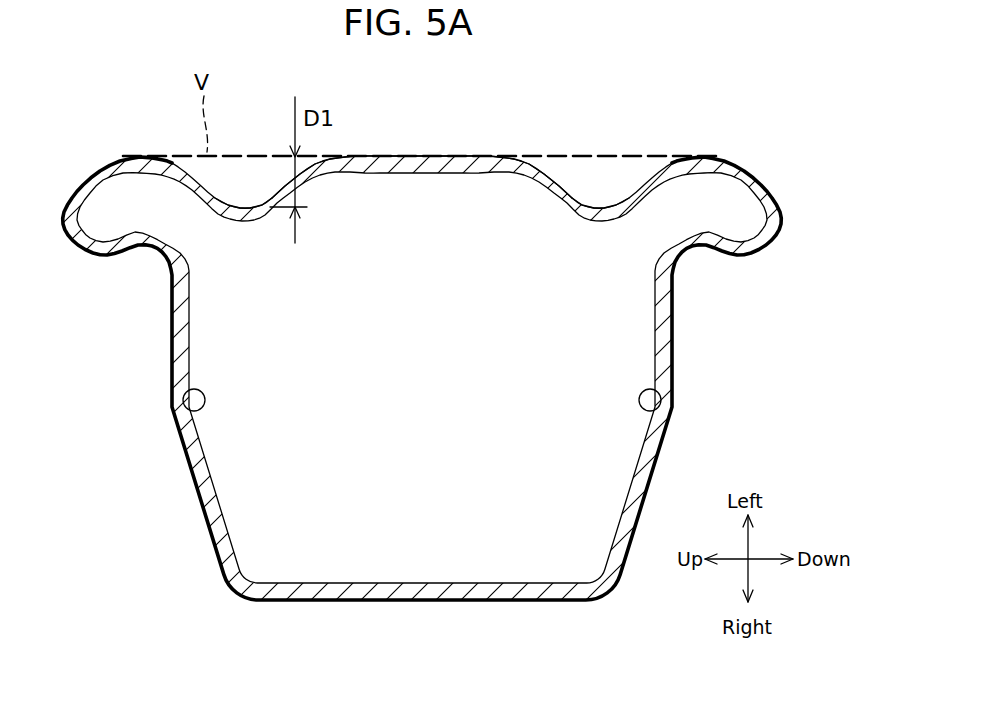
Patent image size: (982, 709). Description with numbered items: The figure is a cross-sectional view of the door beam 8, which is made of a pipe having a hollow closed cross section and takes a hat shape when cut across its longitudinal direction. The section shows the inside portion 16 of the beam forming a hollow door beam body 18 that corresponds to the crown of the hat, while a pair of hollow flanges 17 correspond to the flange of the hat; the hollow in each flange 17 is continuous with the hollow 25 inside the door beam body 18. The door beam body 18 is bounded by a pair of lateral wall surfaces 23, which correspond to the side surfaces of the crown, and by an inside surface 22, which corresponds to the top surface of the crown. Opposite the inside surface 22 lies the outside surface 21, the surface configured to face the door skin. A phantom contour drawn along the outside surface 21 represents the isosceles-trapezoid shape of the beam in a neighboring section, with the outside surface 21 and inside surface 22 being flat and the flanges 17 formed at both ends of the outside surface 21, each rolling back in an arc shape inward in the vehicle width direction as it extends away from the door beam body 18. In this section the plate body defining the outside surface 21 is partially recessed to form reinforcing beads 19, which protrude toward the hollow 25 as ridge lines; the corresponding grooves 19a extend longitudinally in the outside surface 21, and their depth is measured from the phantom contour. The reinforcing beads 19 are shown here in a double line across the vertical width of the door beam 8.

The door beam 8 is at (490, 138).
The inside portion 16 is at (171, 345).
The flange 17 is at (108, 165).
The door beam body 18 is at (673, 340).
The reinforcing bead 19 is at (253, 214).
The groove 19a is at (273, 190).
The outside surface 21 is at (422, 158).
The inside surface 22 is at (409, 601).
The lateral wall surface 23 is at (172, 397).
The hollow 25 is at (434, 400).